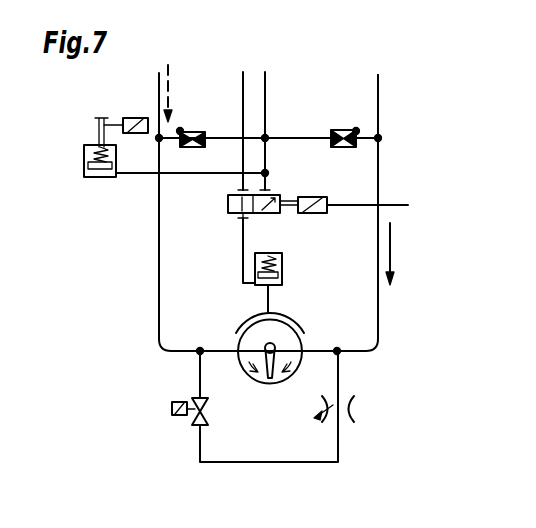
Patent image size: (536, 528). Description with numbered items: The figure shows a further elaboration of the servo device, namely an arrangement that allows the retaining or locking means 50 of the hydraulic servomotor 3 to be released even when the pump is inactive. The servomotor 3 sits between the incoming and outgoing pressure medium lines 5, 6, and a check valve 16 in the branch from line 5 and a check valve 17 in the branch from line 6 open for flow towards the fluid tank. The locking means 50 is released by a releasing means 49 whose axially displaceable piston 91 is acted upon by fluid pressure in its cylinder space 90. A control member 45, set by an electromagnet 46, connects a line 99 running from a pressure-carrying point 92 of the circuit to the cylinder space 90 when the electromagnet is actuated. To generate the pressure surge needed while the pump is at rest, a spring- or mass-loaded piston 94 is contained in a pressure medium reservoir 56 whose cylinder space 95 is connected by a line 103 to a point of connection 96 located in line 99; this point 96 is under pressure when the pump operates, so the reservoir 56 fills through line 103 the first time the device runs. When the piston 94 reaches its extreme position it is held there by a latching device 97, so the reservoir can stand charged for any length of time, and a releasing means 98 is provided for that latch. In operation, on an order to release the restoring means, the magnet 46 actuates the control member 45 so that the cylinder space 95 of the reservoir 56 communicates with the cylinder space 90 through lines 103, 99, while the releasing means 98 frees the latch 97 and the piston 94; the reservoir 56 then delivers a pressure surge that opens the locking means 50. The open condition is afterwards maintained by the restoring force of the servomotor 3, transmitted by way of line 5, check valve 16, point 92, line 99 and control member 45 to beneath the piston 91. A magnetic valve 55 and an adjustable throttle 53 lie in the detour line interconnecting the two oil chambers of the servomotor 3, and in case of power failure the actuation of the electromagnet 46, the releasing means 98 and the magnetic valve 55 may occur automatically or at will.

The hydraulic servomotor 3 is at (303, 361).
The pressure medium line 5 is at (380, 100).
The pressure medium line 6 is at (158, 322).
The check valve 16 is at (357, 131).
The check valve 17 is at (193, 132).
The control member 45 is at (228, 208).
The electromagnet 46 is at (356, 209).
The releasing means 49 is at (282, 283).
The locking means 50 is at (305, 334).
The adjustable throttle 53 is at (345, 416).
The magnetic valve 55 is at (172, 408).
The pressure medium reservoir 56 is at (83, 153).
The cylinder space 90 is at (244, 284).
The piston 91 is at (283, 273).
The point of the fluid circuit 92 is at (268, 136).
The piston 94 is at (83, 167).
The cylinder space 95 is at (102, 176).
The point of connection 96 is at (266, 173).
The latching device 97 is at (95, 125).
The releasing means 98 is at (124, 118).
The line 99 is at (266, 153).
The line 103 is at (180, 172).